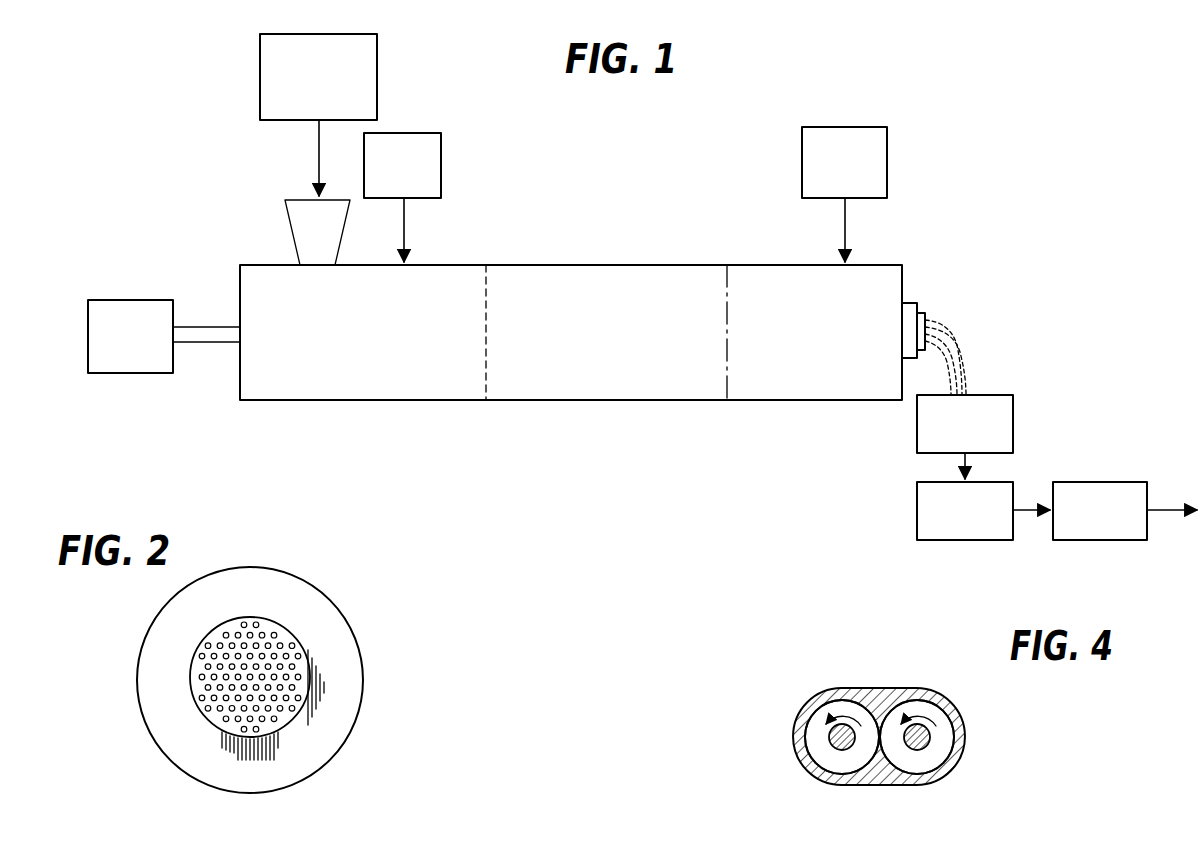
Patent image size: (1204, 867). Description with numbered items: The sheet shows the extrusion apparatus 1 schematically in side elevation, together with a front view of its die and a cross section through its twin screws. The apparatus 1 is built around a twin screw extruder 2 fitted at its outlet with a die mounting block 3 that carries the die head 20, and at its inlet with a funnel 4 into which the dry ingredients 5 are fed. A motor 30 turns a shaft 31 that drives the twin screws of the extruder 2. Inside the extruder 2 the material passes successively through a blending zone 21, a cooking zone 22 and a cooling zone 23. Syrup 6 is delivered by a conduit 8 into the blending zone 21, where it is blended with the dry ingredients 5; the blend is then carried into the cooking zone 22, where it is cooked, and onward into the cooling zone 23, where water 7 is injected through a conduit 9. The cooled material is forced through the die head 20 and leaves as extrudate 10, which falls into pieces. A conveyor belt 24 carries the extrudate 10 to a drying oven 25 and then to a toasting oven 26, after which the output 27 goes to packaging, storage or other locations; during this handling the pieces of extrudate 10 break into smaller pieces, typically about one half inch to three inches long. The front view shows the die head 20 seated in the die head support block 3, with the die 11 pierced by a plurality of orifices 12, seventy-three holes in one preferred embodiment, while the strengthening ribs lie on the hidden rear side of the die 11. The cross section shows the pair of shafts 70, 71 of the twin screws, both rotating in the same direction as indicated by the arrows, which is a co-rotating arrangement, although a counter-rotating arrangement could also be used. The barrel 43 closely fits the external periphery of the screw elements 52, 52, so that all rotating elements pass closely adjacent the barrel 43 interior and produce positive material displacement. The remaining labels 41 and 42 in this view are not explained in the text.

In FIG. 1, the apparatus 1 is at (903, 226).
In FIG. 1, the twin screw extruder 2 is at (238, 316).
In FIG. 1, the die mounting block 3 is at (912, 303).
In FIG. 2, the die mounting block 3 is at (336, 592).
In FIG. 1, the funnel 4 is at (292, 200).
In FIG. 1, the dry ingredients 5 is at (260, 62).
In FIG. 1, the syrup 6 is at (441, 162).
In FIG. 1, the water 7 is at (802, 166).
In FIG. 1, the conduit 8 is at (406, 236).
In FIG. 1, the conduit 9 is at (845, 224).
In FIG. 1, the extrudate 10 is at (970, 328).
In FIG. 2, the die 11 is at (272, 618).
In FIG. 2, the orifices 12 is at (205, 672).
In FIG. 1, the die head 20 is at (925, 318).
In FIG. 2, the die head 20 is at (314, 661).
In FIG. 1, the blending zone 21 is at (365, 400).
In FIG. 1, the cooking zone 22 is at (557, 400).
In FIG. 1, the cooling zone 23 is at (791, 400).
In FIG. 1, the conveyor belt 24 is at (1013, 424).
In FIG. 1, the drying oven 25 is at (917, 498).
In FIG. 1, the toasting oven 26 is at (1117, 482).
In FIG. 1, the output 27 is at (1162, 506).
In FIG. 1, the motor 30 is at (116, 300).
In FIG. 1, the shaft 31 is at (200, 344).
In FIG. 4, the extruder barrel 41 is at (828, 698).
In FIG. 4, the second screw 42 is at (917, 700).
In FIG. 4, the barrel 43 is at (853, 690).
In FIG. 4, the screw elements 52 is at (810, 753).
In FIG. 4, the shaft 70 is at (930, 730).
In FIG. 4, the shaft 71 is at (837, 748).